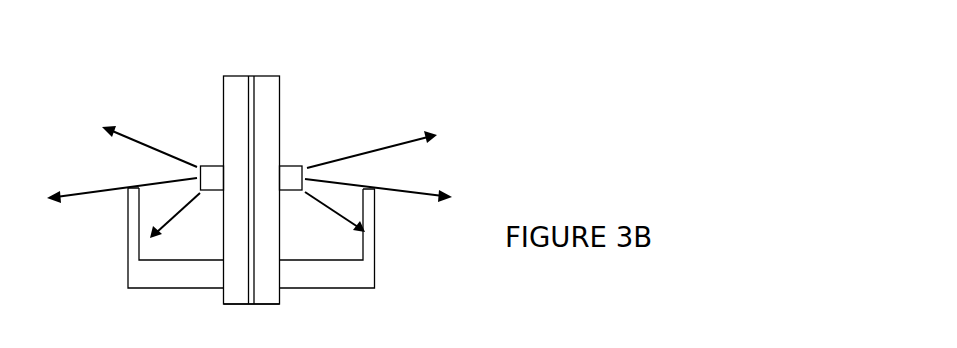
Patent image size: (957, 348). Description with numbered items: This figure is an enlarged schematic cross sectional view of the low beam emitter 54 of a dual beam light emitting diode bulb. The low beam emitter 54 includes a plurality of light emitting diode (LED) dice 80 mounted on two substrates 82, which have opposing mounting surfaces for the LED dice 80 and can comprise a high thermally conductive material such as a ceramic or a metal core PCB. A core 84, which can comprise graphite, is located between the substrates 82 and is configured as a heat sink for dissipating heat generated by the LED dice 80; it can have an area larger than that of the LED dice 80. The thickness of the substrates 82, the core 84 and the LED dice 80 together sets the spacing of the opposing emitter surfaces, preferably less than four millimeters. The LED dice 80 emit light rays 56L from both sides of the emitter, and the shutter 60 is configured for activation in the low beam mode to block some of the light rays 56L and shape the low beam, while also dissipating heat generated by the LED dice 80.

The low beam emitter 54 is at (244, 71).
The substrates 82 is at (267, 90).
The core 84 is at (253, 290).
The light emitting diode (LED) dice 80 is at (210, 165).
The shutter 60 is at (118, 228).
The light rays 56L is at (145, 142).